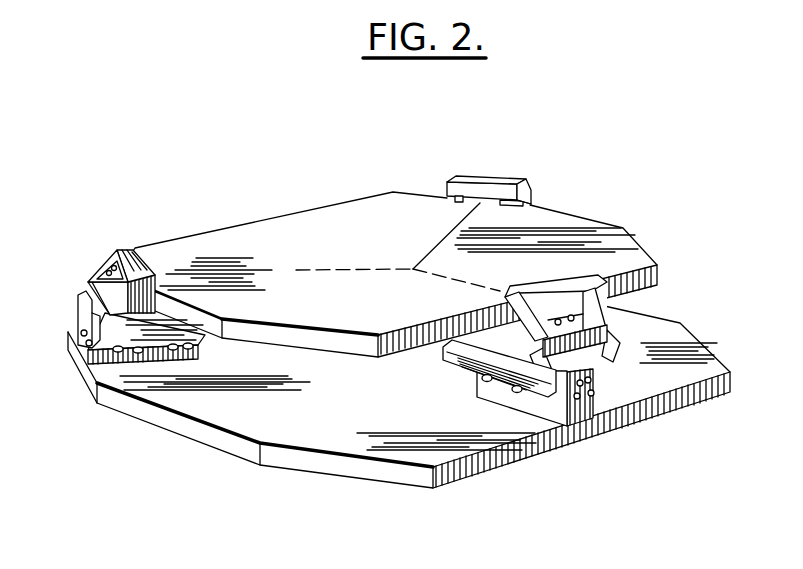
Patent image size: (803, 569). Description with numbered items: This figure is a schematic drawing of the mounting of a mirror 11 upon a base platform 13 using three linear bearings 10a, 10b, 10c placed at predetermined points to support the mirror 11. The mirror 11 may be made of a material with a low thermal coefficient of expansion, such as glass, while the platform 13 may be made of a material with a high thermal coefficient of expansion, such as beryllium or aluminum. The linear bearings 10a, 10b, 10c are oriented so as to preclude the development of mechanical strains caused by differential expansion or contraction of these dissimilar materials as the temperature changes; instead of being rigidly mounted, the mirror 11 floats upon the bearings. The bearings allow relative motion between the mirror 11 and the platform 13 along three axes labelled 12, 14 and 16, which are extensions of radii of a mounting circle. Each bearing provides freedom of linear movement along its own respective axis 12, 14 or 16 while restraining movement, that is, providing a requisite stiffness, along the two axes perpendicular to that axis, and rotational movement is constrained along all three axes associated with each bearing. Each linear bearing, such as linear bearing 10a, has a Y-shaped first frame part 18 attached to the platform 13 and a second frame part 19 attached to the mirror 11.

The mirror 11 is at (253, 218).
The base platform 13 is at (270, 478).
The axis 14 is at (717, 355).
The axis 12 is at (103, 275).
The linear bearing 10a is at (585, 412).
The linear bearing 10b is at (533, 183).
The linear bearing 10c is at (80, 367).
The axis 16 is at (502, 183).
The Y-shaped first frame part 18 is at (512, 410).
The second frame part 19 is at (492, 347).